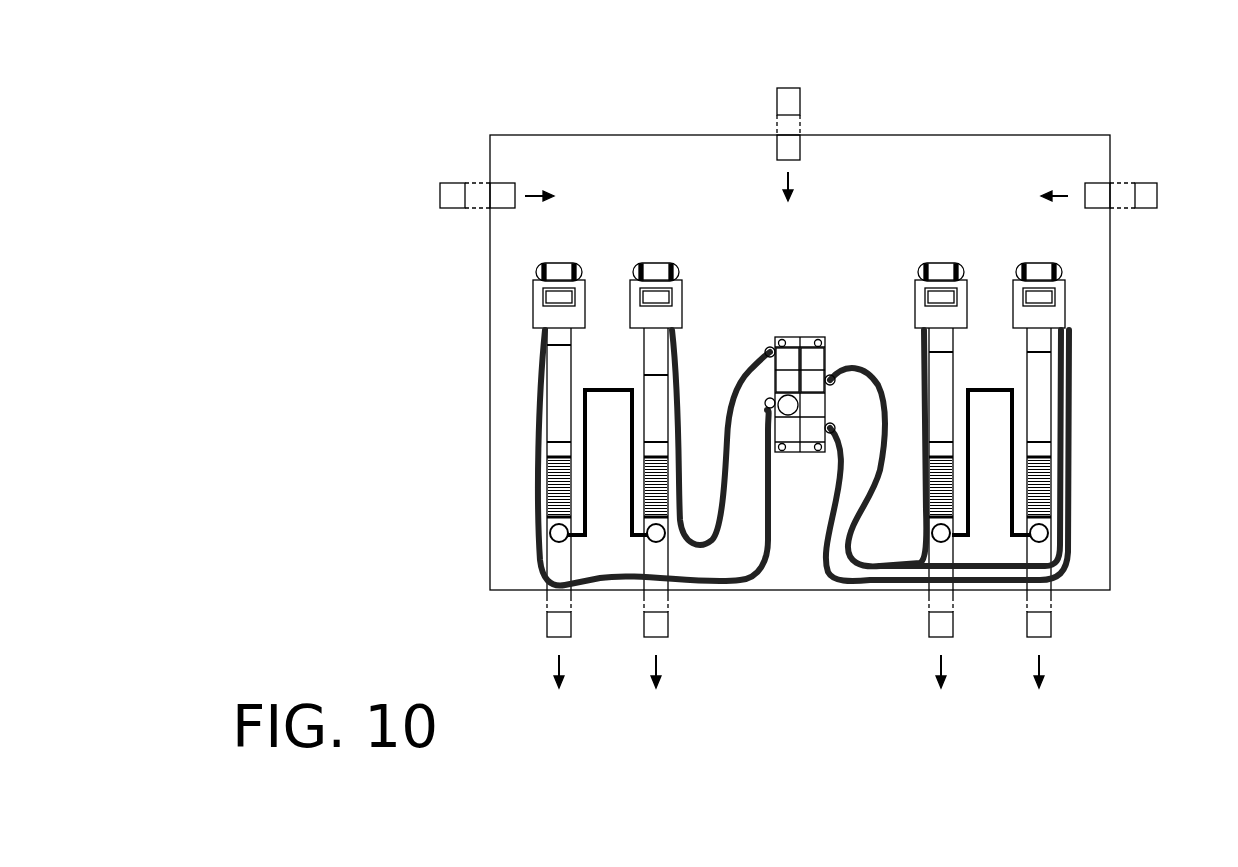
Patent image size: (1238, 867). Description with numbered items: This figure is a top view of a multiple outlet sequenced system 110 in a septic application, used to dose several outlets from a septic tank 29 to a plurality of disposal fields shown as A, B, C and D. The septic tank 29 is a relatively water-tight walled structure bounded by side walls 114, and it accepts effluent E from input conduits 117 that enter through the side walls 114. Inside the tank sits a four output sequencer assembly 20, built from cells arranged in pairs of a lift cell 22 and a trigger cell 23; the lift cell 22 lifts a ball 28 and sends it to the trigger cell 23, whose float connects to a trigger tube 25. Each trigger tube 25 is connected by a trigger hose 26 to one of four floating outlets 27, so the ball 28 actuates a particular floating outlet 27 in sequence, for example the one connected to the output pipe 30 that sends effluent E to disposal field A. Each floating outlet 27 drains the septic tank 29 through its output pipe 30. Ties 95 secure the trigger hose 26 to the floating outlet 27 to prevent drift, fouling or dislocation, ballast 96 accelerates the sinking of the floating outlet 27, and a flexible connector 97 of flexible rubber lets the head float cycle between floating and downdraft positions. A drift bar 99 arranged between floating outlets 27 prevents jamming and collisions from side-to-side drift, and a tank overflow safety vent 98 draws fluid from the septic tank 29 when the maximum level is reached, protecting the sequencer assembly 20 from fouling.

The multiple outlet sequenced system 110 is at (694, 81).
The side wall 114 is at (1097, 110).
The input conduit 117 is at (800, 92).
The septic tank 29 is at (448, 353).
The floating outlet 27 is at (545, 302).
The ballast 96 is at (636, 268).
The trigger hose 26 is at (543, 412).
The tie 95 is at (572, 346).
The flexible connector 97 is at (547, 508).
The drift bar 99 is at (630, 434).
The tank overflow safety vent 98 is at (650, 538).
The output pipe 30 is at (549, 640).
The sequencer assembly 20 is at (814, 456).
The lift cell 22 is at (812, 355).
The trigger cell 23 is at (790, 365).
The trigger tube 25 is at (765, 398).
The ball 28 is at (788, 418).